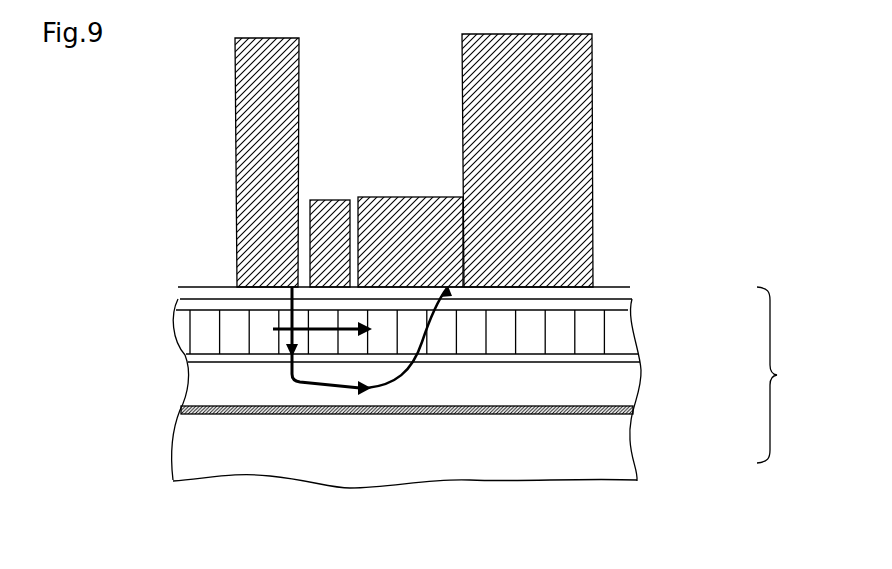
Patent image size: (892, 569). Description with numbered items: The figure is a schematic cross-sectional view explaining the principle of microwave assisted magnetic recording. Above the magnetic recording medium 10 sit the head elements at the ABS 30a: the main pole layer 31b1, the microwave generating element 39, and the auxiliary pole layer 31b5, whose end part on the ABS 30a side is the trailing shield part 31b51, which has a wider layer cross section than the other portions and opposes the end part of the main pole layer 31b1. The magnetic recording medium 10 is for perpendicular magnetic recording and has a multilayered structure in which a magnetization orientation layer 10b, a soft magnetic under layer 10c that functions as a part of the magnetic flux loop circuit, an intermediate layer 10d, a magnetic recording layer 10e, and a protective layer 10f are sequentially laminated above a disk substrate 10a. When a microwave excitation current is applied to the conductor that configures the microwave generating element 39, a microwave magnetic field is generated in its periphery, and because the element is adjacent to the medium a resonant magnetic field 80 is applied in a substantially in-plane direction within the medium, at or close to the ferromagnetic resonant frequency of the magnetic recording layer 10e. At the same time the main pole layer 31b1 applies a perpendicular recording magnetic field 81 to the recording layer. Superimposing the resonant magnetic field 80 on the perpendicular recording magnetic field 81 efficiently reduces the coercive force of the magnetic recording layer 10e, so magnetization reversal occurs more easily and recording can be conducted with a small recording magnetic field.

The magnetic recording medium 10 is at (492, 387).
The disk substrate 10a is at (622, 444).
The magnetization orientation layer 10b is at (622, 410).
The soft magnetic under layer 10c is at (622, 385).
The intermediate layer 10d is at (622, 356).
The magnetic recording layer 10e is at (622, 334).
The protective layer 10f is at (622, 303).
The ABS 30a is at (503, 288).
The main pole layer 31b1 is at (252, 213).
The auxiliary pole layer 31b5 is at (573, 117).
The trailing shield part 31b51 is at (435, 228).
The microwave generating element 39 is at (331, 206).
The resonant magnetic field 80 is at (300, 329).
The perpendicular recording magnetic field 81 is at (300, 380).